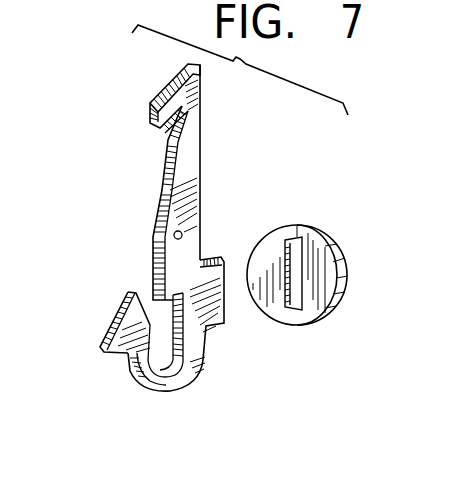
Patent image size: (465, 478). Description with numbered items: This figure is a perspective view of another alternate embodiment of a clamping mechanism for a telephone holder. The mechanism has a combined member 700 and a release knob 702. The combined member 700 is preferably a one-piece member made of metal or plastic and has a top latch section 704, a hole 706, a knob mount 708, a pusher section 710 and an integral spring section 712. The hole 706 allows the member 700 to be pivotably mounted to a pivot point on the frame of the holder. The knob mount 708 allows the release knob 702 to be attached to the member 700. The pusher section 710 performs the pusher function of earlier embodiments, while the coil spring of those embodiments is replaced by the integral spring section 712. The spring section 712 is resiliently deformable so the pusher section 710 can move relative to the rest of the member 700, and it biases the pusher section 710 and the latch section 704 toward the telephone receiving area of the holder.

The combined member 700 is at (163, 186).
The release knob 702 is at (340, 246).
The top latch section 704 is at (160, 86).
The hole 706 is at (183, 234).
The knob mount 708 is at (224, 326).
The pusher section 710 is at (110, 318).
The integral spring section 712 is at (178, 392).